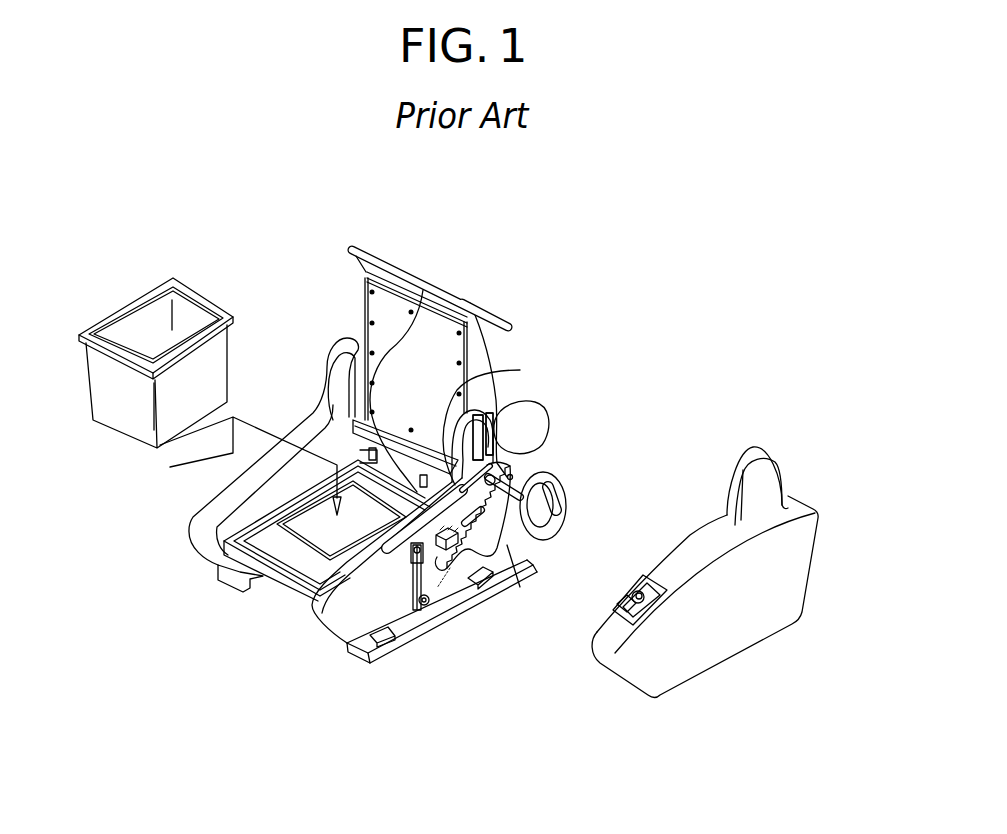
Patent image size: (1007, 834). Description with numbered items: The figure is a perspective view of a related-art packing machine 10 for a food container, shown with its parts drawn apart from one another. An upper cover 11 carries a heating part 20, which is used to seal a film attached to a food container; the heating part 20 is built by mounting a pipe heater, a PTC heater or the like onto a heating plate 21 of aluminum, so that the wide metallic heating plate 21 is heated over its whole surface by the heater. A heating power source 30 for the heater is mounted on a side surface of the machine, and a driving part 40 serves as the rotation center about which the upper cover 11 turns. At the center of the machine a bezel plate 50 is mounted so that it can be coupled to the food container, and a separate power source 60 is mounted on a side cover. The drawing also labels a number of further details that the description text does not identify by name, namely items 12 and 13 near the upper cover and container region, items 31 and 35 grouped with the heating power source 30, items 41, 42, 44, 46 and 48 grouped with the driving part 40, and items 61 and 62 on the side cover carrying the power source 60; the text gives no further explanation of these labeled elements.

The packing machine 10 is at (530, 347).
The upper cover 11 is at (358, 247).
The window 12 is at (423, 290).
The cassette box 13 is at (113, 309).
The heating part 20 is at (362, 297).
The heating plate 21 is at (363, 337).
The heating power source 30 is at (538, 595).
The slide member 31 is at (473, 590).
The rack plate 35 is at (519, 589).
The driving part 40 is at (603, 497).
The holder arm 41 is at (513, 490).
The holder body 42 is at (500, 410).
The connecting rod 44 is at (523, 474).
The rotary wheel 46 is at (510, 477).
The bracket 48 is at (440, 410).
The bezel plate 50 is at (281, 541).
The power source 60 is at (635, 587).
The cover body 61 is at (618, 610).
The switch 62 is at (622, 602).